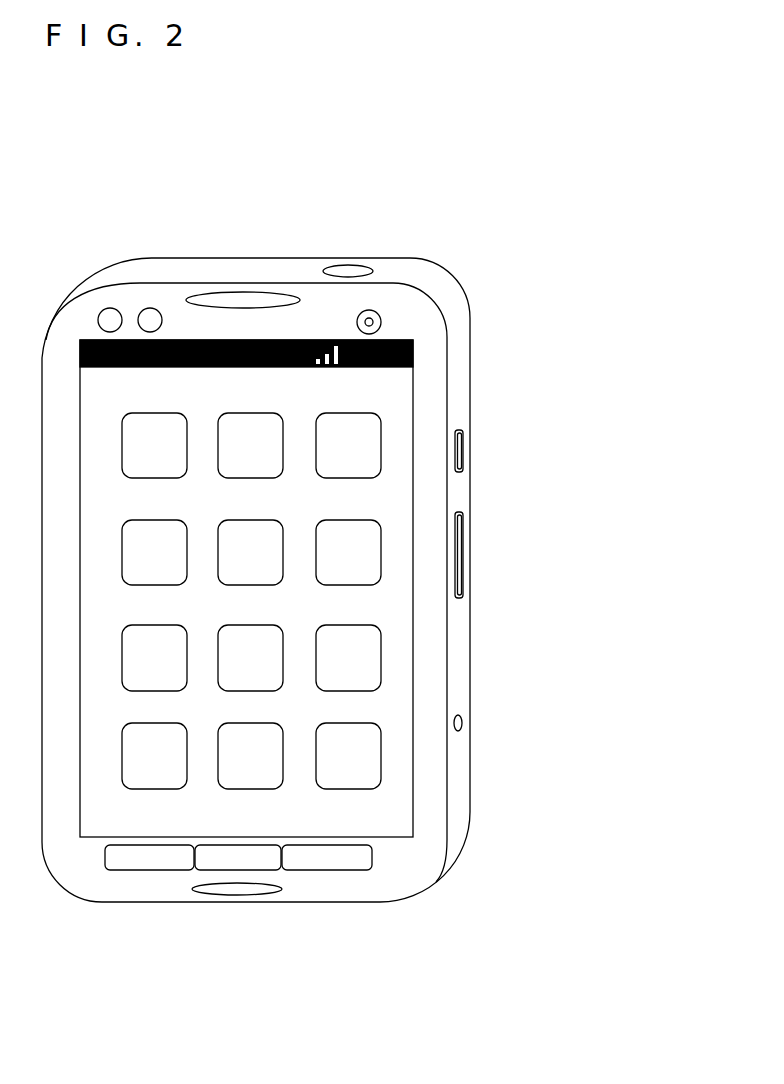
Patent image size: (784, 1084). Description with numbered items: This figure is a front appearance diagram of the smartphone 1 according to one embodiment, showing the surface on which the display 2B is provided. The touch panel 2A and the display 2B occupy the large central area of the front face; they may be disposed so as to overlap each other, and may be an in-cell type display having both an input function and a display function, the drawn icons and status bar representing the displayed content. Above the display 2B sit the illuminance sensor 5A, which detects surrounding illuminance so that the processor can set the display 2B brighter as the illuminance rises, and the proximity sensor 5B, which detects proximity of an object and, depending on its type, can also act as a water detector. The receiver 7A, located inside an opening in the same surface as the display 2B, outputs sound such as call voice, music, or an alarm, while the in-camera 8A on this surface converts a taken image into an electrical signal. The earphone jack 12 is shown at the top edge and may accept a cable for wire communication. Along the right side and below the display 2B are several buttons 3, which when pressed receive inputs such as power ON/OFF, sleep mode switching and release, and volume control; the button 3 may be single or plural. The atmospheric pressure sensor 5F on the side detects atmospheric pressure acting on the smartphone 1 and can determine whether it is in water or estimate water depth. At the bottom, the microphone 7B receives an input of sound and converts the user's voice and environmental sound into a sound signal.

The smartphone 1 is at (494, 358).
The touch panel 2A is at (398, 708).
The display 2B is at (246, 564).
The button 3 is at (463, 455).
The illuminance sensor 5A is at (106, 310).
The proximity sensor 5B is at (153, 308).
The atmospheric pressure sensor 5F is at (462, 723).
The receiver 7A is at (240, 291).
The microphone 7B is at (280, 891).
The in-camera 8A is at (381, 320).
The earphone jack 12 is at (350, 265).